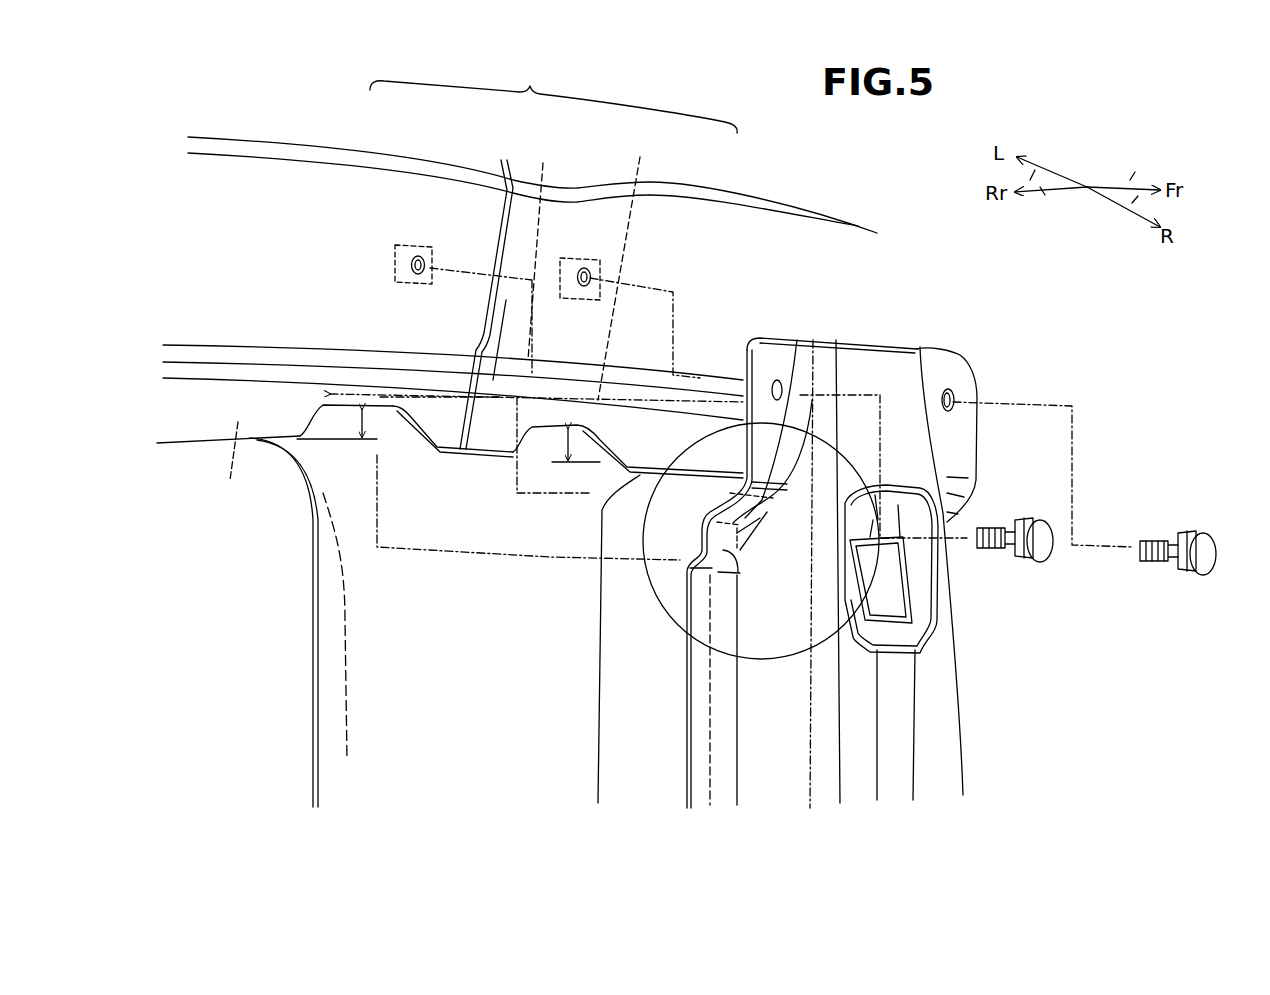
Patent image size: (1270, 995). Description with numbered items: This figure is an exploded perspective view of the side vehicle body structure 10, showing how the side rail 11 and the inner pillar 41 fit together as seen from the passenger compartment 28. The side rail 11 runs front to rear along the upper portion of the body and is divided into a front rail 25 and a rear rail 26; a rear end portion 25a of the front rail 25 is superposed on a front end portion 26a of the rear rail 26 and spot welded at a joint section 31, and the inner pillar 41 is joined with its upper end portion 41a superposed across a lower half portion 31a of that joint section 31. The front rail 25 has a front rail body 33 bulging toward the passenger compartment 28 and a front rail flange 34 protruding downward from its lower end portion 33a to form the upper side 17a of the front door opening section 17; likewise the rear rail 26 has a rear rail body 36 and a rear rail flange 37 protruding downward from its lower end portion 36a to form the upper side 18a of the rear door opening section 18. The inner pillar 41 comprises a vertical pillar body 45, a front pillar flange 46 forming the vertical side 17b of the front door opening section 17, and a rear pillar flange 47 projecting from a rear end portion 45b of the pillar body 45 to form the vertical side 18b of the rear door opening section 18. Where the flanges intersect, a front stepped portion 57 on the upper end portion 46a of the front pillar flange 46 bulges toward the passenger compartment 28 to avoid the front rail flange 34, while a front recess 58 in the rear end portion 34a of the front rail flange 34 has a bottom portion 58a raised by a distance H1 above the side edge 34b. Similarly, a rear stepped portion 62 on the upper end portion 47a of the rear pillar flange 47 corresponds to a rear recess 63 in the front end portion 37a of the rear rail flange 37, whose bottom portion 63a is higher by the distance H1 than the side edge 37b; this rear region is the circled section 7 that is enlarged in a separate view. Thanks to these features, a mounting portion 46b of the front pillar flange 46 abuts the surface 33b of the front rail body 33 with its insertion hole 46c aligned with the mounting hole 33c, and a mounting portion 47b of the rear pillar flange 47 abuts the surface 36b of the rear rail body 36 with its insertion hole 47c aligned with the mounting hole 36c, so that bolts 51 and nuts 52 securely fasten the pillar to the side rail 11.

The side vehicle body structure 10 is at (263, 95).
The side rail 11 is at (553, 100).
The rear rail 26 is at (374, 186).
The front rail 25 is at (688, 215).
The joint section 31 is at (528, 233).
The rear rail body 36 is at (215, 218).
The lower end portion 36a is at (188, 373).
The surface 36b is at (382, 221).
The mounting hole 36c is at (425, 275).
The nuts 52 is at (423, 250).
The front rail body 33 is at (827, 268).
The lower end portion 33a is at (658, 400).
The surface 33b is at (664, 256).
The mounting hole 33c is at (598, 280).
The rear rail flange 37 is at (232, 480).
The front end portion 37a is at (358, 404).
The side edge 37b is at (290, 440).
The rear end portion 25a is at (503, 327).
The front end portion 26a is at (513, 308).
The lower half portion 31a is at (512, 343).
The rear end portion 34a is at (600, 410).
The front rail flange 34 is at (730, 453).
The side edge 34b is at (655, 453).
The rear pillar flange 47 is at (688, 775).
The upper end portion 47a is at (748, 410).
The mounting portion 47b is at (770, 365).
The insertion hole 47c is at (782, 378).
The inner pillar 41 is at (965, 690).
The upper end portion 41a is at (887, 368).
The front pillar flange 46 is at (937, 653).
The upper end portion 46a is at (920, 467).
The mounting portion 46b is at (965, 375).
The guide bolt hole 46c is at (958, 408).
The rear door opening section 18 is at (243, 622).
The upper side 18a is at (183, 425).
The vertical side 18b is at (323, 707).
The rear recess 63 is at (313, 420).
The bottom portion 63a is at (392, 412).
The front recess 58 is at (607, 487).
The bottom portion 58a is at (515, 440).
The distance H1 is at (365, 440).
The front door opening section 17 is at (625, 639).
The upper side 17a is at (720, 467).
The vertical side 17b is at (595, 727).
The rear stepped portion 62 is at (724, 552).
The section 7 is at (775, 657).
The front stepped portion 57 is at (953, 523).
The bolts 51 is at (1053, 530).
The pillar body 45 is at (900, 740).
The rear end portion 45b is at (710, 722).
The passenger compartment 28 is at (1073, 650).